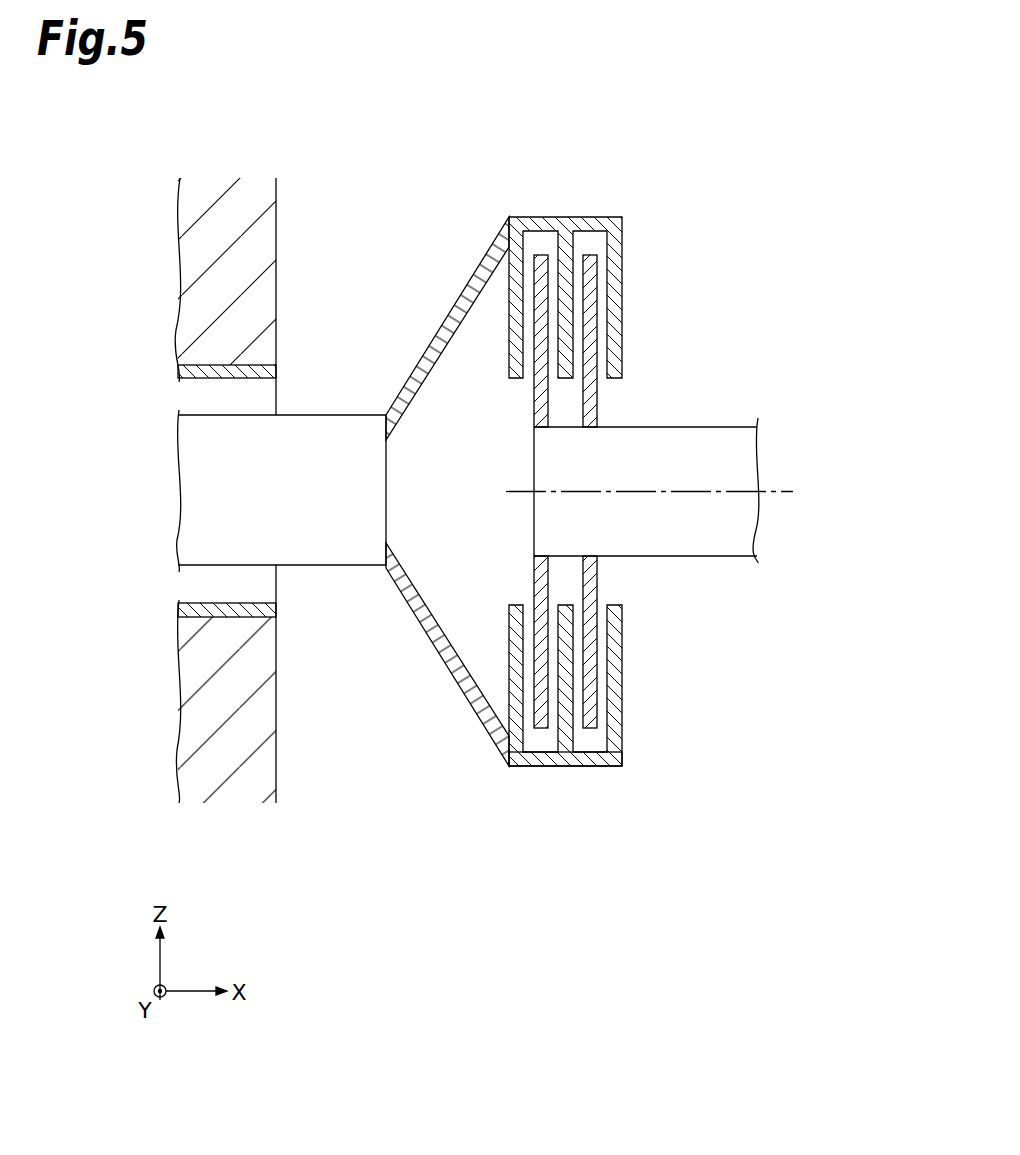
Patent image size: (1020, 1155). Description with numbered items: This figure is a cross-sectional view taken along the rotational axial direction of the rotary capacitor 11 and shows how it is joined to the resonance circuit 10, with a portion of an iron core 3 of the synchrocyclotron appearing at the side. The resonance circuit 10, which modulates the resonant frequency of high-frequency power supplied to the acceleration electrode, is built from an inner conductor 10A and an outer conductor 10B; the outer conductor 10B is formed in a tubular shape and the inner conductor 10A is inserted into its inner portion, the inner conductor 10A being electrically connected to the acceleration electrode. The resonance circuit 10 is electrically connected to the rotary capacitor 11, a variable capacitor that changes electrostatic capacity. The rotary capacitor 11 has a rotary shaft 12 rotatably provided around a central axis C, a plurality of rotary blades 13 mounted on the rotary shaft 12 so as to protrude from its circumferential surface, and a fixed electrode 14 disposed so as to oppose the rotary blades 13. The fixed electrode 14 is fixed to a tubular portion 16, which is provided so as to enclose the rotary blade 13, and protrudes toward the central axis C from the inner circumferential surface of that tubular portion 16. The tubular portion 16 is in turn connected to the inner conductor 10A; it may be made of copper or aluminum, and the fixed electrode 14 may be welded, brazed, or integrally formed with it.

The iron core 3 is at (272, 238).
The resonance circuit 10 is at (343, 491).
The inner conductor 10A is at (353, 548).
The outer conductor 10B is at (247, 613).
The rotary capacitor 11 is at (646, 527).
The rotary shaft 12 is at (712, 435).
The rotary blade 13 is at (541, 257).
The fixed electrode 14 is at (511, 688).
The tubular portion 16 is at (540, 758).
The central axis C is at (777, 489).